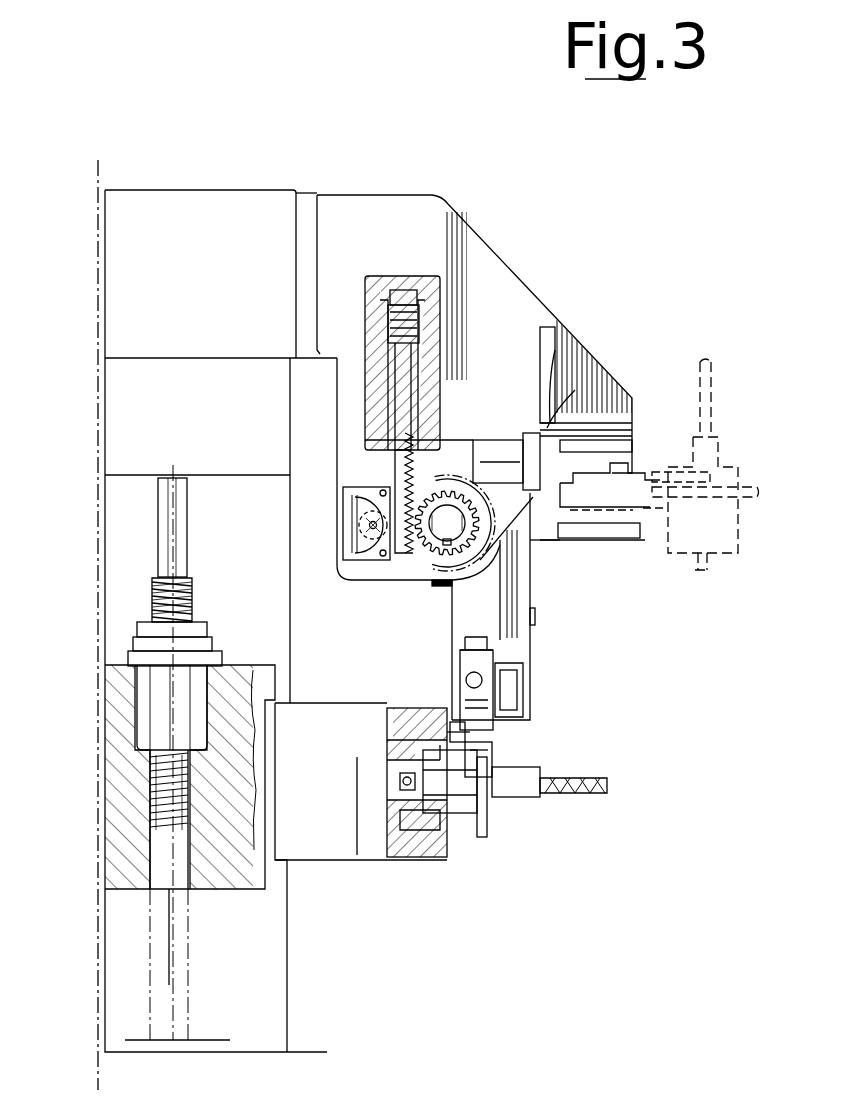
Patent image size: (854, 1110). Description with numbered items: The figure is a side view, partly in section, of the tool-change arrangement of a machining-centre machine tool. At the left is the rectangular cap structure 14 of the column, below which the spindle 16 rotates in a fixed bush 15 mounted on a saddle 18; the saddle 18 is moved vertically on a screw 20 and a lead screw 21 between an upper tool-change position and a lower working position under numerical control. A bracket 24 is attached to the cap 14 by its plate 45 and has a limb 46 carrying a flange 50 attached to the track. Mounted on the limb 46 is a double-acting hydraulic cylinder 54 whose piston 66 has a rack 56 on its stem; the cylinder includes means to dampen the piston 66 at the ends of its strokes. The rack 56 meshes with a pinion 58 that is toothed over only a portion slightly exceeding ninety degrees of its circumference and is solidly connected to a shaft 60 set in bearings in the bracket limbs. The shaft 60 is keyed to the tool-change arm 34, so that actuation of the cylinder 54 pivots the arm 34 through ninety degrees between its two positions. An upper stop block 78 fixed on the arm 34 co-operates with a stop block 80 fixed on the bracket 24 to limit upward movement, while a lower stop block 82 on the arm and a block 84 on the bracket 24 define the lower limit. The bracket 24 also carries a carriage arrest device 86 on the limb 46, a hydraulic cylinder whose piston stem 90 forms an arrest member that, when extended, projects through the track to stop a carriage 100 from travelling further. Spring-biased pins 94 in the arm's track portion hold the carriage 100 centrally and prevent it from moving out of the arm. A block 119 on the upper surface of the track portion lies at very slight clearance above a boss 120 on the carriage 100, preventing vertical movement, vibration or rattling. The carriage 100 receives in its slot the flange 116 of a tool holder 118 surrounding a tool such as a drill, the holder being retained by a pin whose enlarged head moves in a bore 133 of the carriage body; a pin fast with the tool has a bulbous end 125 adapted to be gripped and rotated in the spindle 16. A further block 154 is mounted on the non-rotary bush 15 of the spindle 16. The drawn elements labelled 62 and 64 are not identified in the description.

The rectangular cap structure 14 is at (208, 198).
The fixed bush 15 is at (447, 855).
The spindle 16 is at (433, 850).
The saddle 18 is at (213, 875).
The screw 20 is at (155, 600).
The lead screw 21 is at (192, 686).
The bracket 24 is at (500, 244).
The arm 34 is at (463, 440).
The plate 45 is at (318, 231).
The limb 46 is at (520, 290).
The flange 50 is at (560, 355).
The double-acting hydraulic cylinder 54 is at (436, 350).
The rack 56 is at (400, 458).
The pinion 58 is at (425, 556).
The shaft 60 is at (528, 540).
The slide block 62 is at (360, 558).
The pivot pin 64 is at (355, 514).
The piston 66 is at (420, 337).
The upper stop block 78 is at (595, 418).
The stop block 80 is at (575, 390).
The lower stop block 82 is at (450, 610).
The block 84 is at (444, 586).
The carriage arrest device 86 is at (488, 444).
The piston stem 90 is at (613, 437).
The pins 94 is at (500, 658).
The carriage 100 is at (655, 545).
The flange 116 is at (487, 835).
The tool holder 118 is at (720, 452).
The block 119 is at (615, 452).
The boss 120 is at (637, 470).
The bulbous end 125 is at (392, 735).
The bore 133 is at (470, 748).
The further block 154 is at (455, 722).